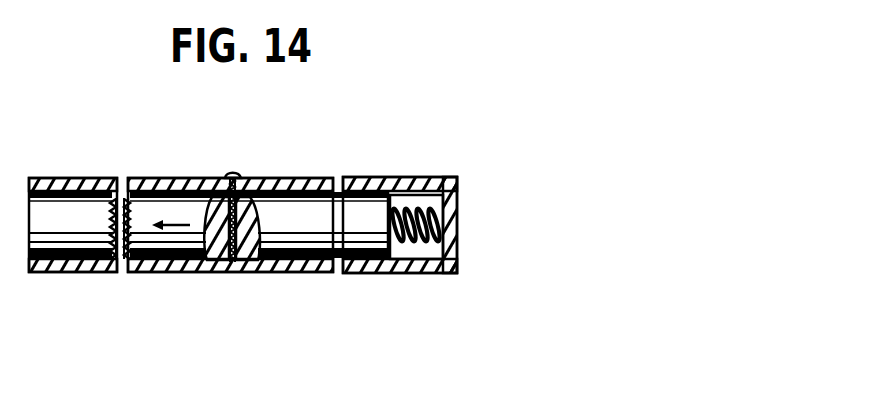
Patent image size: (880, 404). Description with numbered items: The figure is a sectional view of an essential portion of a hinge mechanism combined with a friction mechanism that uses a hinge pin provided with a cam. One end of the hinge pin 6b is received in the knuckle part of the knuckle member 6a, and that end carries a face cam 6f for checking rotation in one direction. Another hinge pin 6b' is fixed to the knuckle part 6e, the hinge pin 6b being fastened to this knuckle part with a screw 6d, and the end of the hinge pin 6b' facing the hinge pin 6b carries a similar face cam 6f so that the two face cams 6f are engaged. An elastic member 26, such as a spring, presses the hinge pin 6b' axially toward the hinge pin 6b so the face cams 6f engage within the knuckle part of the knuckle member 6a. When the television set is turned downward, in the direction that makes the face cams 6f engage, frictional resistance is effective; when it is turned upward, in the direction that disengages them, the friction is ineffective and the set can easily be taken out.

The knuckle member 6a is at (457, 212).
The hinge pin 6b is at (73, 277).
The hinge pin 6b' is at (259, 284).
The screw 6d is at (232, 170).
The knuckle part 6e is at (191, 178).
The face cam 6f is at (112, 216).
The elastic member 26 is at (443, 242).